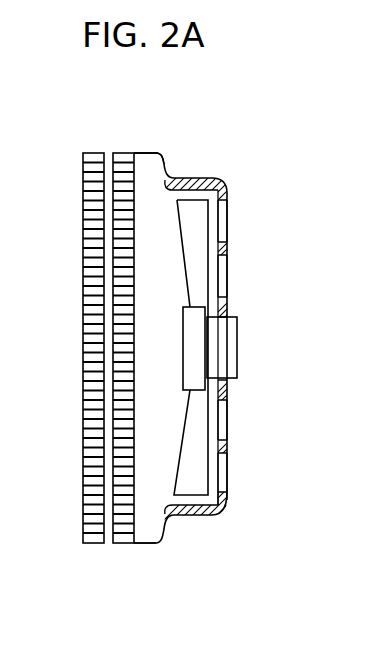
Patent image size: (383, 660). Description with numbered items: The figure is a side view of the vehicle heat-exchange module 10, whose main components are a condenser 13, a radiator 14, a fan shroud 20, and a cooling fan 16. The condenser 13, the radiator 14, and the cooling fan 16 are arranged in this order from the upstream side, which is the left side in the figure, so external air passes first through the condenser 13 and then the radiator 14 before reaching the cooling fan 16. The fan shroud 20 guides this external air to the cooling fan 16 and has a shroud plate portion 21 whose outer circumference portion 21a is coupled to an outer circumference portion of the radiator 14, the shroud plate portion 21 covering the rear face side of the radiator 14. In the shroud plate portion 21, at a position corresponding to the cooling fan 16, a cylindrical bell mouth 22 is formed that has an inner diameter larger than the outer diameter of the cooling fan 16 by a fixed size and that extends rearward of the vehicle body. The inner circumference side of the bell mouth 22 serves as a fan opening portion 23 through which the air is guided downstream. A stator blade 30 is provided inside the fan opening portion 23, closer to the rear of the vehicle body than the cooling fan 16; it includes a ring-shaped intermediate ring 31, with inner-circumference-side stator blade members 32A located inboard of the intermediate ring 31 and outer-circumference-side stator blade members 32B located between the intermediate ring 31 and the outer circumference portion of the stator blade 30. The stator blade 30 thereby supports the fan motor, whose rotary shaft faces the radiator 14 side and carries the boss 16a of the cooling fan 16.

The vehicle heat-exchange module 10 is at (160, 145).
The condenser 13 is at (92, 545).
The radiator 14 is at (125, 545).
The cooling fan 16 is at (198, 205).
The boss 16a is at (192, 342).
The fan shroud 20 is at (173, 528).
The shroud plate portion 21 is at (152, 545).
The outer circumference portion 21a is at (138, 152).
The bell mouth 22 is at (210, 518).
The fan opening portion 23 is at (224, 497).
The stator blade 30 is at (227, 420).
The intermediate ring 31 is at (228, 248).
The inner-circumference-side stator blade members 32A is at (222, 280).
The outer-circumference-side stator blade members 32B is at (222, 218).